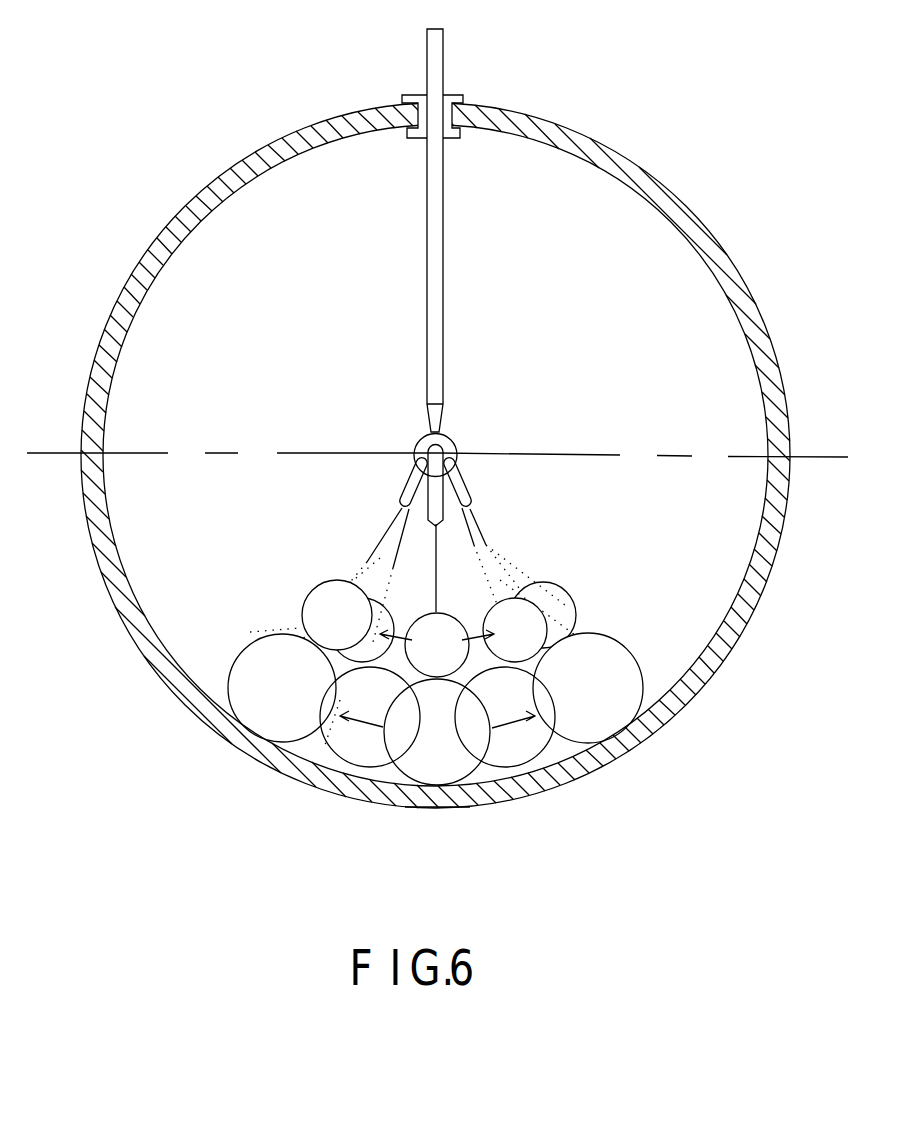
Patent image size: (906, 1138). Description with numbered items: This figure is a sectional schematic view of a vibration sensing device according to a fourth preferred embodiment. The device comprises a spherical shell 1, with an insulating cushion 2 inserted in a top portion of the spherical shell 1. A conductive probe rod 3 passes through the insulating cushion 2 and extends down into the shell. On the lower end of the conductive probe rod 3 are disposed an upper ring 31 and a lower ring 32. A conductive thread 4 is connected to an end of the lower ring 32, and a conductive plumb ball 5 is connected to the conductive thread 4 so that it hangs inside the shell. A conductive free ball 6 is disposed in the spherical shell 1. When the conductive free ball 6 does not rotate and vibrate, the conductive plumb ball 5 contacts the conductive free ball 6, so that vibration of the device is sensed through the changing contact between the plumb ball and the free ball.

The spherical shell 1 is at (746, 610).
The insulating cushion 2 is at (463, 96).
The conductive probe rod 3 is at (438, 283).
The upper ring 31 is at (449, 435).
The lower ring 32 is at (425, 502).
The conductive thread 4 is at (440, 553).
The conductive plumb ball 5 is at (455, 612).
The conductive free ball 6 is at (414, 810).